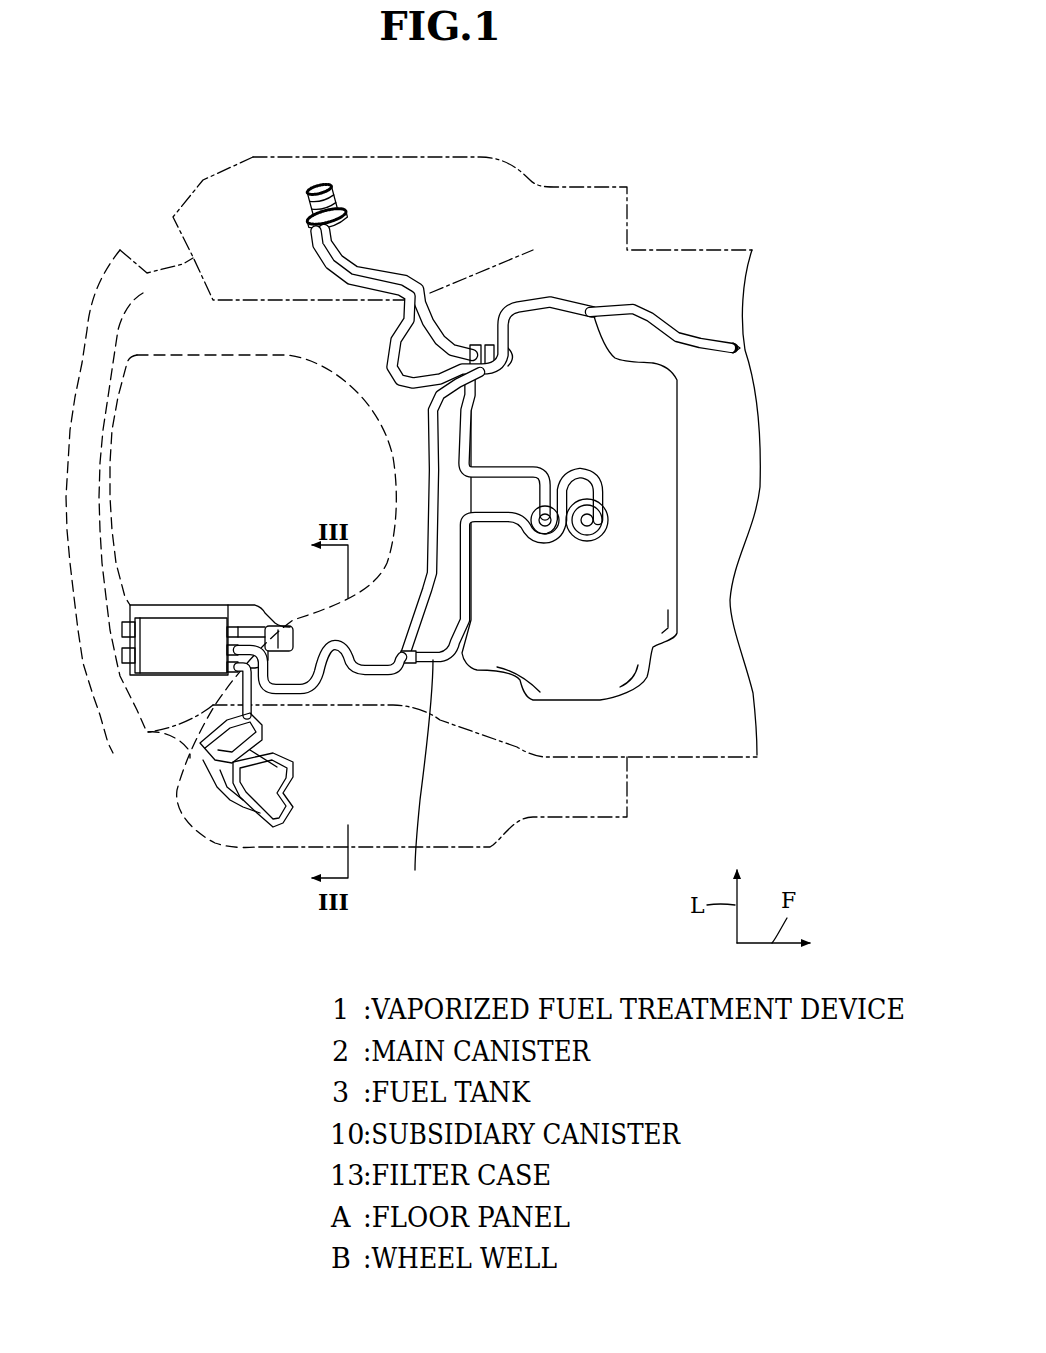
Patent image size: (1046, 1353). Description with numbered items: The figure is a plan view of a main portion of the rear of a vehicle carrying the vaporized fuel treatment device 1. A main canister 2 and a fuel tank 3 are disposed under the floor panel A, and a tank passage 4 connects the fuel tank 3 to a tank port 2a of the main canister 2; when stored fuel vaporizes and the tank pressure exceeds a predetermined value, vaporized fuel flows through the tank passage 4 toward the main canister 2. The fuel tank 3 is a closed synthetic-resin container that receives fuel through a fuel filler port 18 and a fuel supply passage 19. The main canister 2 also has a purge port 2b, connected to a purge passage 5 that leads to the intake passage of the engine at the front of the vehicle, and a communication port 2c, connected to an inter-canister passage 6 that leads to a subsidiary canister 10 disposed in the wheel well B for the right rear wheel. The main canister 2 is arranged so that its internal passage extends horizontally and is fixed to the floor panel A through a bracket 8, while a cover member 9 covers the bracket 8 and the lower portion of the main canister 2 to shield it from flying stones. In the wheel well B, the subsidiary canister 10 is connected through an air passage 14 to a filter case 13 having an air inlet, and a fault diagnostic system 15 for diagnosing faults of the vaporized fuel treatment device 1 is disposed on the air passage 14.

The vaporized fuel treatment device 1 is at (160, 753).
The main canister 2 is at (152, 639).
The tank port 2a is at (233, 624).
The purge port 2b is at (250, 630).
The communication port 2c is at (237, 685).
The fuel tank 3 is at (680, 428).
The tank passage 4 is at (419, 781).
The purge passage 5 is at (672, 330).
The inter-canister passage 6 is at (243, 688).
The bracket 8 is at (290, 627).
The cover member 9 is at (153, 605).
The subsidiary canister 10 is at (250, 795).
The filter case 13 is at (243, 815).
The air passage 14 is at (272, 723).
The fault diagnostic system 15 is at (273, 763).
The fuel filler port 18 is at (307, 210).
The fuel supply passage 19 is at (343, 232).
The floor panel A is at (672, 757).
The wheel well B is at (280, 850).